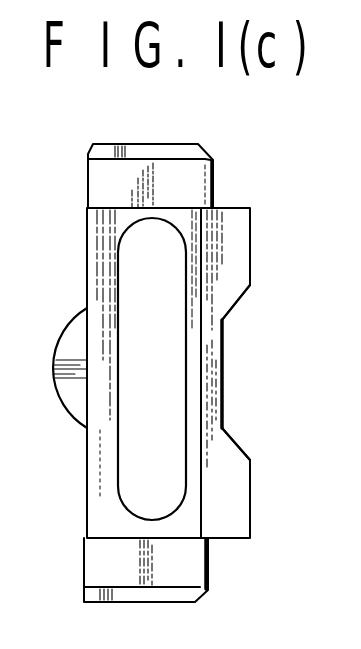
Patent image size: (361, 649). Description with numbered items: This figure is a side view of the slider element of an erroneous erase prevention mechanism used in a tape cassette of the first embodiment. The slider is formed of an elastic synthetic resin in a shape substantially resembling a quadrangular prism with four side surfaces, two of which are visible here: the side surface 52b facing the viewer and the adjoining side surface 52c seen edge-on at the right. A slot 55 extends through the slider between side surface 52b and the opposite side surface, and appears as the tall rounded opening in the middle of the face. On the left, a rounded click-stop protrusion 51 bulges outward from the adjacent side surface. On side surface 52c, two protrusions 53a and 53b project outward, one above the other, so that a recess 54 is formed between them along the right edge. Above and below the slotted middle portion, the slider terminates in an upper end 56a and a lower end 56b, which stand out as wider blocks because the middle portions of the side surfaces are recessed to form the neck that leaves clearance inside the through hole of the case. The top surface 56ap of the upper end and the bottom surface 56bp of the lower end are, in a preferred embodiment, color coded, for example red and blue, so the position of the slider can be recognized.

The click-stop protrusion 51 is at (72, 330).
The side surface 52b is at (92, 242).
The side surface 52c is at (240, 379).
The protrusion 53a is at (235, 262).
The protrusion 53b is at (227, 469).
The recess 54 is at (223, 336).
The slot 55 is at (158, 488).
The upper end 56a is at (190, 179).
The top surface 56ap is at (150, 143).
The lower end 56b is at (123, 567).
The bottom surface 56bp is at (165, 603).